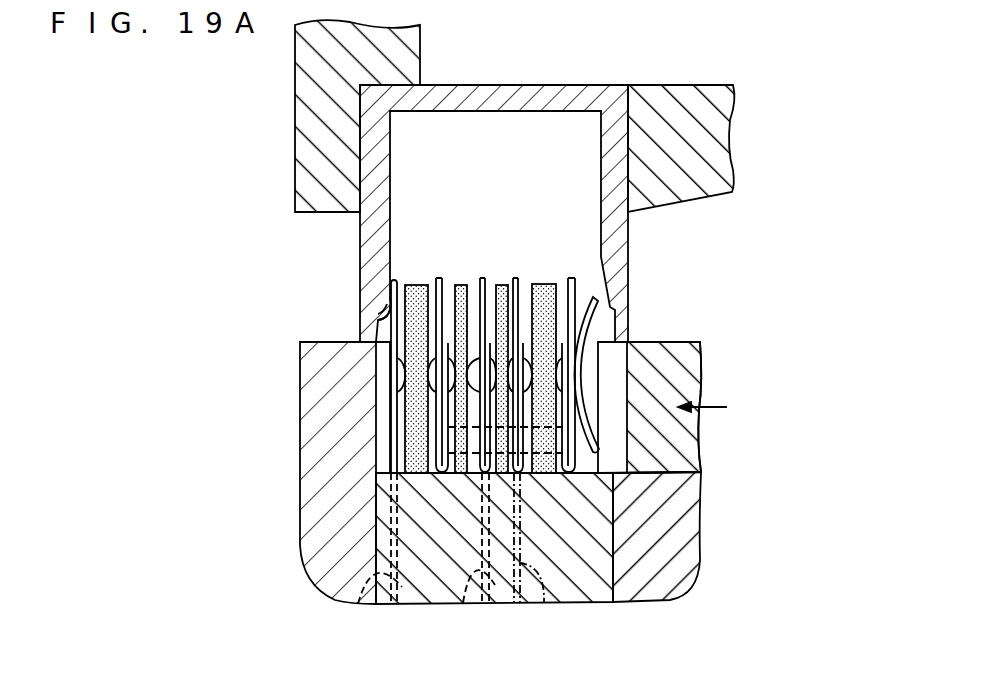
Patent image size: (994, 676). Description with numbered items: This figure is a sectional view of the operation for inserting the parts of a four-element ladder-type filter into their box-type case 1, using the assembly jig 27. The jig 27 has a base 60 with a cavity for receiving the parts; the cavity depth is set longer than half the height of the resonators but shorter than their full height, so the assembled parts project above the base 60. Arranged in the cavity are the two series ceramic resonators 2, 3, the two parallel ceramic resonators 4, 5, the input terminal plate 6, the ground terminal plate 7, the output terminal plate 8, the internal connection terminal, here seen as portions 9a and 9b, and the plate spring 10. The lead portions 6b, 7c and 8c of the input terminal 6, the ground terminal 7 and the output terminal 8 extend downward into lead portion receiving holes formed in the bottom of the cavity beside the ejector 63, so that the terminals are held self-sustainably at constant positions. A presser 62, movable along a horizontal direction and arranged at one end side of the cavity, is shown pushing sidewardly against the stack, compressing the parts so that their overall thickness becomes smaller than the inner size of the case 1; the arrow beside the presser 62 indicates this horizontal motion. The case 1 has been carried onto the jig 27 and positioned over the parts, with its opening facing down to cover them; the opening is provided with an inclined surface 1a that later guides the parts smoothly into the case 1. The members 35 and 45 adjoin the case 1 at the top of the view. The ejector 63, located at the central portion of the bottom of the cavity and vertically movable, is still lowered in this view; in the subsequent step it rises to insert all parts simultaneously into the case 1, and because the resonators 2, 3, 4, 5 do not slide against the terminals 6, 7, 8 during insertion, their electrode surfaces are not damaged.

The case 1 is at (495, 85).
The inclined surface 1a is at (360, 320).
The series ceramic resonator 2 is at (413, 285).
The series ceramic resonator 3 is at (545, 284).
The parallel ceramic resonator 4 is at (461, 285).
The parallel ceramic resonator 5 is at (501, 285).
The input terminal plate 6 is at (390, 376).
The lead portion 6b is at (363, 605).
The ground terminal plate 7 is at (483, 278).
The lead portion 7c is at (465, 605).
The output terminal plate 8 is at (517, 278).
The lead portion 8c is at (545, 602).
The contact terminal 9a is at (437, 278).
The contact terminal 9b is at (572, 278).
The plate spring 10 is at (593, 297).
The assembly jig 27 is at (787, 250).
The mating member wall 35 is at (298, 141).
The mating member wall 45 is at (684, 100).
The base 60 is at (310, 470).
The presser 62 is at (676, 342).
The ejector 63 is at (588, 585).